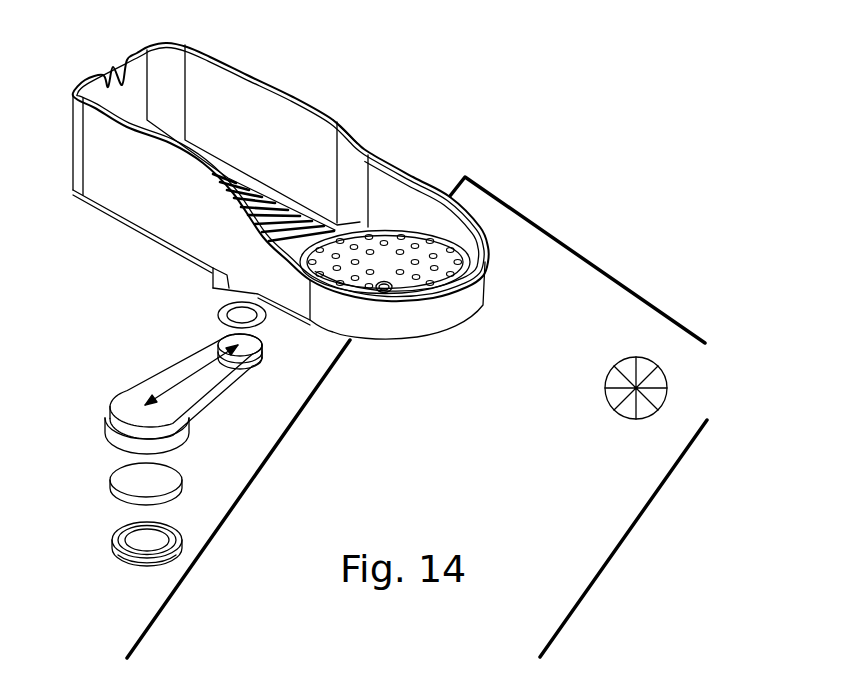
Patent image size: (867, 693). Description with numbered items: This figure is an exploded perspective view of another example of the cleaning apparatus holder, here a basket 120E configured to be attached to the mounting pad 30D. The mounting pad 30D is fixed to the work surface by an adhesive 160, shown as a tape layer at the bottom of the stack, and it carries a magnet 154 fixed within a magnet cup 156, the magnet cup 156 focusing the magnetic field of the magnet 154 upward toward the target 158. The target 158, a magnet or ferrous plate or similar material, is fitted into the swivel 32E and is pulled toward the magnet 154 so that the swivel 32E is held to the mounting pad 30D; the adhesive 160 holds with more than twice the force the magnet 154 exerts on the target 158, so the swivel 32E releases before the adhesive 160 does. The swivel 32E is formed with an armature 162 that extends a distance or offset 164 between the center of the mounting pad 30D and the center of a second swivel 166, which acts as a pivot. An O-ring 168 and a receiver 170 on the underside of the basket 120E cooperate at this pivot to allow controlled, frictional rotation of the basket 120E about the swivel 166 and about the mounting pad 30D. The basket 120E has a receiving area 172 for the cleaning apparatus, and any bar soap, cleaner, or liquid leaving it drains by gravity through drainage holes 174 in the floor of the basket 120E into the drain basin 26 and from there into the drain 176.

The basket 120E is at (338, 191).
The receiving area 172 is at (333, 122).
The drainage holes 174 is at (500, 259).
The receiver 170 is at (213, 270).
The swivel 166 is at (218, 333).
The O-ring 168 is at (263, 320).
The armature 162 is at (162, 380).
The offset 164 is at (141, 386).
The swivel 32E is at (107, 403).
The target 158 is at (107, 440).
The magnet 154 is at (182, 495).
The magnet cup 156 is at (186, 570).
The mounting pad 30D is at (160, 553).
The adhesive 160 is at (140, 562).
The drain 176 is at (620, 420).
The drain basin 26 is at (570, 612).